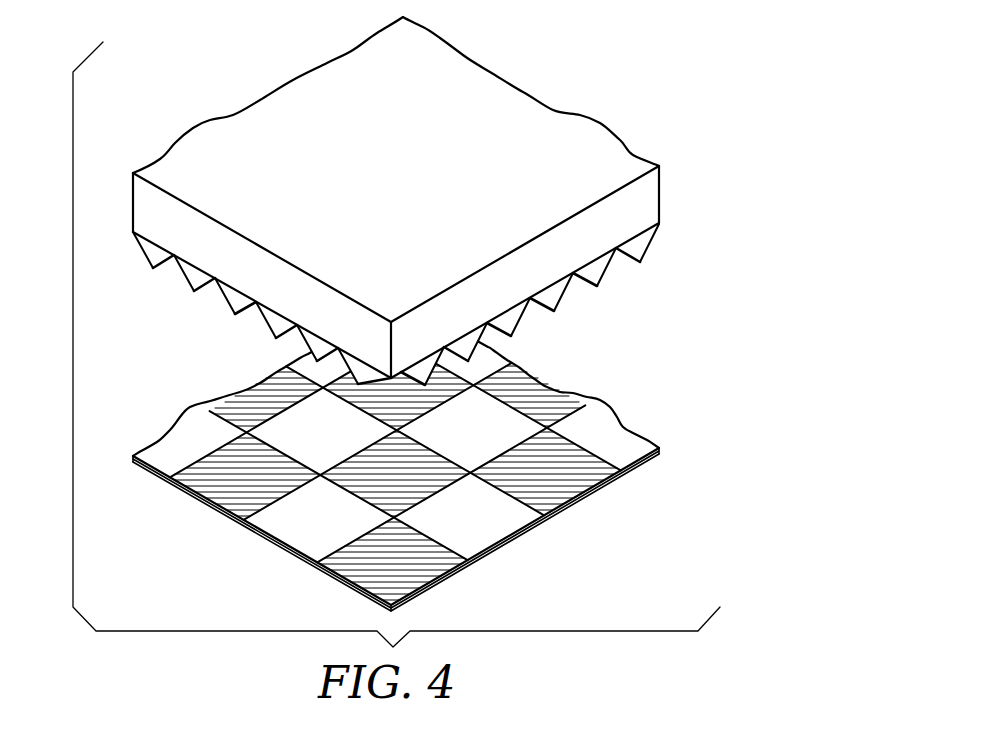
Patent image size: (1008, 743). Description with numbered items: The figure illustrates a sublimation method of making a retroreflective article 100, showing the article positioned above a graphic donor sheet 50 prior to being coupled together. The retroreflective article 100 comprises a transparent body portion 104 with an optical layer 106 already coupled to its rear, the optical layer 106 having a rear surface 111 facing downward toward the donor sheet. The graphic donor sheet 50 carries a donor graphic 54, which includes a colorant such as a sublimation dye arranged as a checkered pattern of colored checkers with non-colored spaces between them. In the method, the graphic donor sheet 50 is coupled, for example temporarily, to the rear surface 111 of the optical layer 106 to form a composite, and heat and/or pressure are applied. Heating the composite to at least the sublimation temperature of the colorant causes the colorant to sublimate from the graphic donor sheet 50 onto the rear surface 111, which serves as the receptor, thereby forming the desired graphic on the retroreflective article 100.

The retroreflective article 100 is at (434, 201).
The body portion 104 is at (676, 187).
The optical layer 106 is at (429, 304).
The rear surface 111 is at (583, 280).
The graphic donor sheet 50 is at (395, 455).
The donor graphic 54 is at (600, 500).